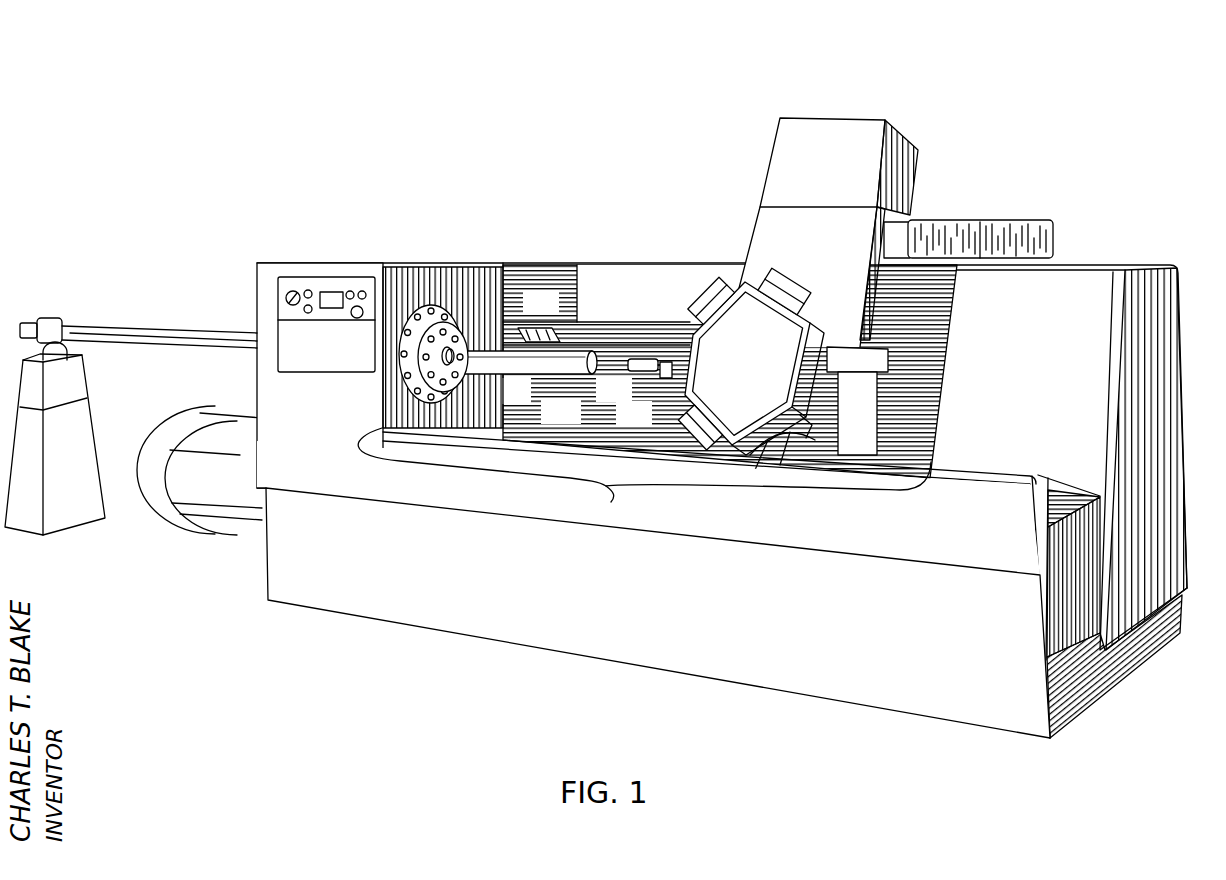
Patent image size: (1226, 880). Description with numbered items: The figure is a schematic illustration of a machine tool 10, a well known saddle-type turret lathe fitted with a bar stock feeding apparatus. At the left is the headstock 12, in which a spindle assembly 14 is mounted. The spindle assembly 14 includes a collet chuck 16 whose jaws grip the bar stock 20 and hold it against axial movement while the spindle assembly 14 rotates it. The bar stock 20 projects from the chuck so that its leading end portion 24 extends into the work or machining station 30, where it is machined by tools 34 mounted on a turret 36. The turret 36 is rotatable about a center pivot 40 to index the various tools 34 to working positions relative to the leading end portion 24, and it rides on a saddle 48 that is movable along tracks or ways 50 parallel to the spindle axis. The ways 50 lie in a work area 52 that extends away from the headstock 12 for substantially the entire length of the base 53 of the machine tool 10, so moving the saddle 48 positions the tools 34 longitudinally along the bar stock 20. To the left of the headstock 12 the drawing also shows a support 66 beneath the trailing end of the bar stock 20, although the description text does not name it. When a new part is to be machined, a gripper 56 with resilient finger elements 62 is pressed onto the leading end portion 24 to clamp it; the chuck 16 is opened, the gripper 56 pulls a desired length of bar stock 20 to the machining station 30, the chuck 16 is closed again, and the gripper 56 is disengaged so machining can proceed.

The machine tool 10 is at (1156, 76).
The headstock 12 is at (323, 259).
The spindle assembly 14 is at (441, 298).
The collet chuck 16 is at (456, 340).
The bar stock 20 is at (572, 326).
The leading end portion 24 is at (554, 333).
The machining station 30 is at (727, 371).
The tools 34 is at (821, 278).
The turret 36 is at (686, 322).
The center pivot 40 is at (750, 368).
The saddle 48 is at (913, 178).
The ways 50 is at (618, 333).
The work area 52 is at (644, 474).
The base 53 is at (548, 601).
The gripper 56 is at (666, 380).
The resilient finger elements 62 is at (640, 372).
The support pedestal 66 is at (95, 424).